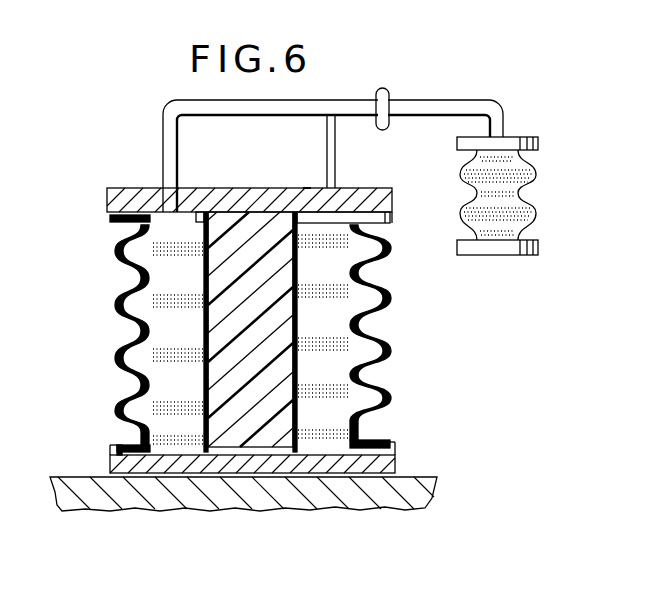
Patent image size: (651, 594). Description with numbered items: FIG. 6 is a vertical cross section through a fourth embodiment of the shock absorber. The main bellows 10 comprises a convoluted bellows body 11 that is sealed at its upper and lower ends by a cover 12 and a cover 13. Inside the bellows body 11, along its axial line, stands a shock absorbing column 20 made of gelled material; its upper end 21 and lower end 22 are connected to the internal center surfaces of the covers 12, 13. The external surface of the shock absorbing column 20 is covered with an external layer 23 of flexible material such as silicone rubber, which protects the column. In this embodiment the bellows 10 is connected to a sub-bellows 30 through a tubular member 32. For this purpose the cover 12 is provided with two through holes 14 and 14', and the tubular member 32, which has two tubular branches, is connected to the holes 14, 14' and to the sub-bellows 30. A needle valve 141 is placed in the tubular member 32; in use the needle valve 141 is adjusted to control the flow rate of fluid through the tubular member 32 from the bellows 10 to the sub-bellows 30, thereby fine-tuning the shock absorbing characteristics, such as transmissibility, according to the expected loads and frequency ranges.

The bellows 10 is at (378, 193).
The bellows body 11 is at (388, 299).
The cover 12 is at (307, 187).
The cover 13 is at (398, 447).
The through hole 14 is at (247, 156).
The through hole 14' is at (360, 152).
The shock absorbing column 20 is at (225, 230).
The upper end 21 is at (262, 207).
The lower end 22 is at (241, 460).
The external layer 23 is at (165, 212).
The sub-bellows 30 is at (507, 138).
The tubular member 32 is at (442, 102).
The needle valve 141 is at (385, 92).